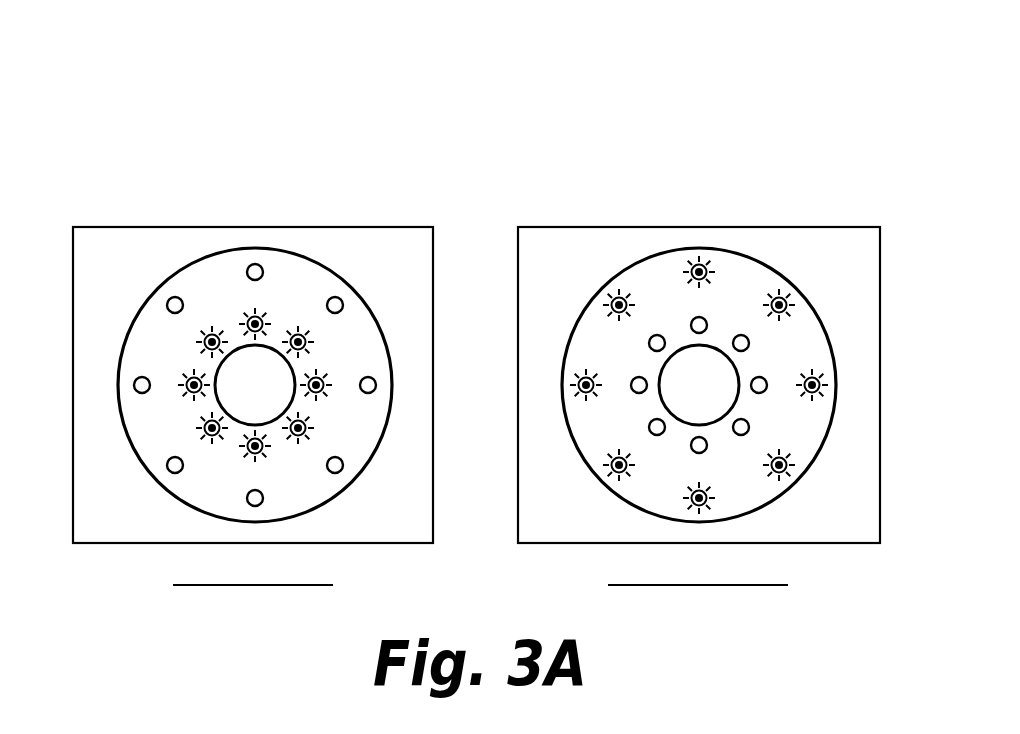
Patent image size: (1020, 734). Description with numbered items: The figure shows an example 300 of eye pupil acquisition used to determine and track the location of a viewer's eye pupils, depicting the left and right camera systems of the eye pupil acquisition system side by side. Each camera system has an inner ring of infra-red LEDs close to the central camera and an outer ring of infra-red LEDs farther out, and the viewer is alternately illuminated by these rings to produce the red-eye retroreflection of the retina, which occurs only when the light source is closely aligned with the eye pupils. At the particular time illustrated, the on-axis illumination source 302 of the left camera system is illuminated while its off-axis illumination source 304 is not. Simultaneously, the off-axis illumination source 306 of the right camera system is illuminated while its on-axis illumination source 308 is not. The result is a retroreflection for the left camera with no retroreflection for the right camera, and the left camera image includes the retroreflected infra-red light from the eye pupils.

The example of eye pupil acquisition 300 is at (680, 80).
The on-axis illumination source 302 is at (205, 322).
The off-axis illumination source 304 is at (236, 265).
The off-axis illumination source 306 is at (680, 264).
The on-axis illumination source 308 is at (645, 322).